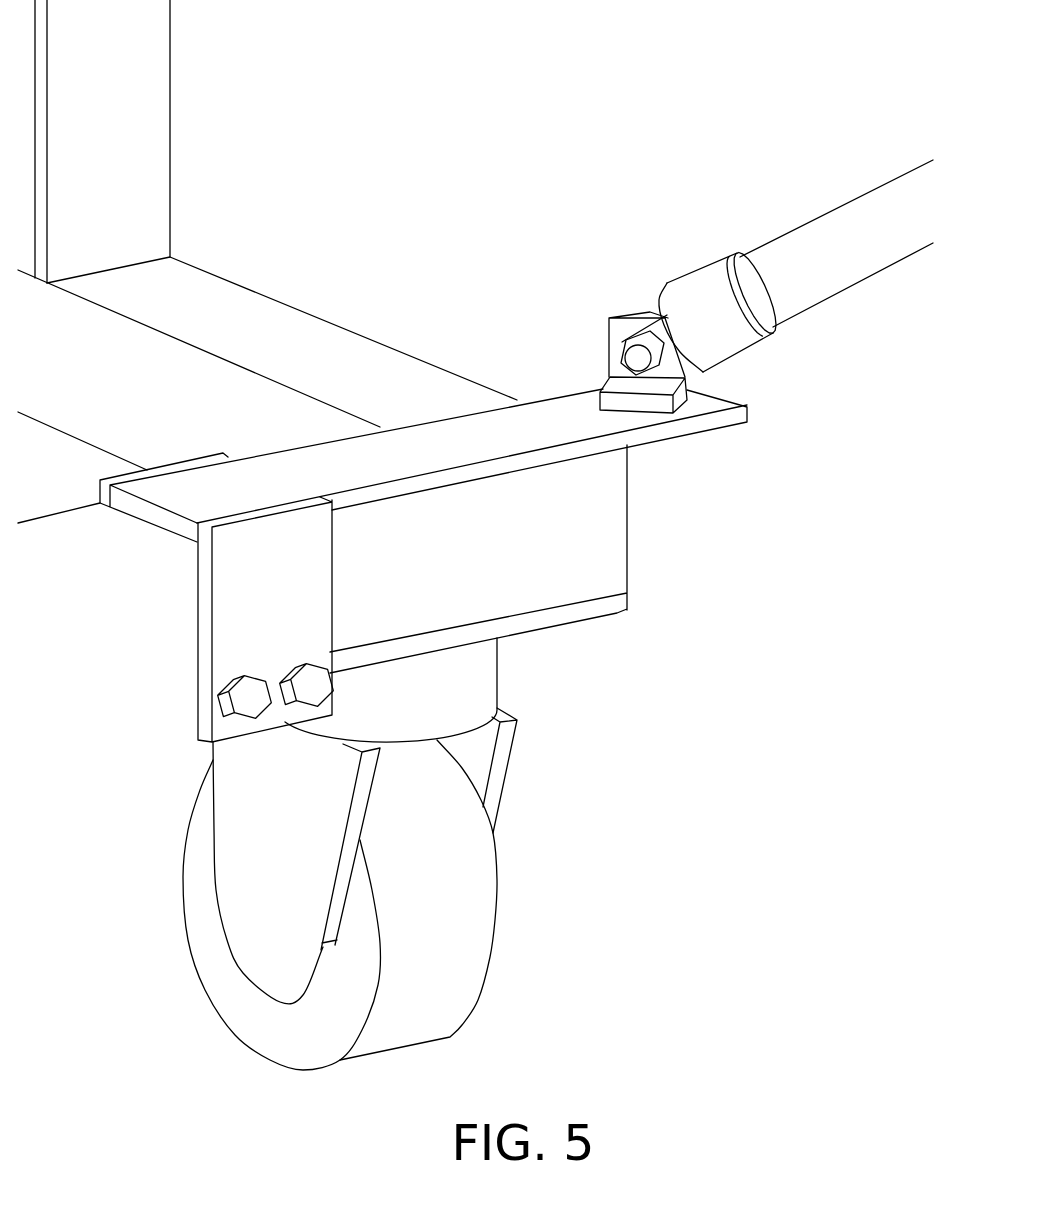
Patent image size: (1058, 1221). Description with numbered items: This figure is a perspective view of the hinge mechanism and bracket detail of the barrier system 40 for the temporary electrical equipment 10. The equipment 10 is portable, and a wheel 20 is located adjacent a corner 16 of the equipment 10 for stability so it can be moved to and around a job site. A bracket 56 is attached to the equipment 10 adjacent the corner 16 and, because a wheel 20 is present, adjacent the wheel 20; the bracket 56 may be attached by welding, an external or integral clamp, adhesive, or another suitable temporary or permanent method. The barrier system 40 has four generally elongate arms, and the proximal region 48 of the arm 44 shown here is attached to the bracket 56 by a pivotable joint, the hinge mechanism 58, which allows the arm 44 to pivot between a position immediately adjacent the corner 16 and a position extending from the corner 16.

The temporary electrical equipment 10 is at (170, 123).
The barrier system 40 is at (268, 217).
The corner 16 is at (627, 533).
The bracket 56 is at (260, 628).
The wheel 20 is at (460, 918).
The hinge mechanism 58 is at (606, 317).
The proximal region 48 is at (802, 262).
The arm 44 is at (907, 206).